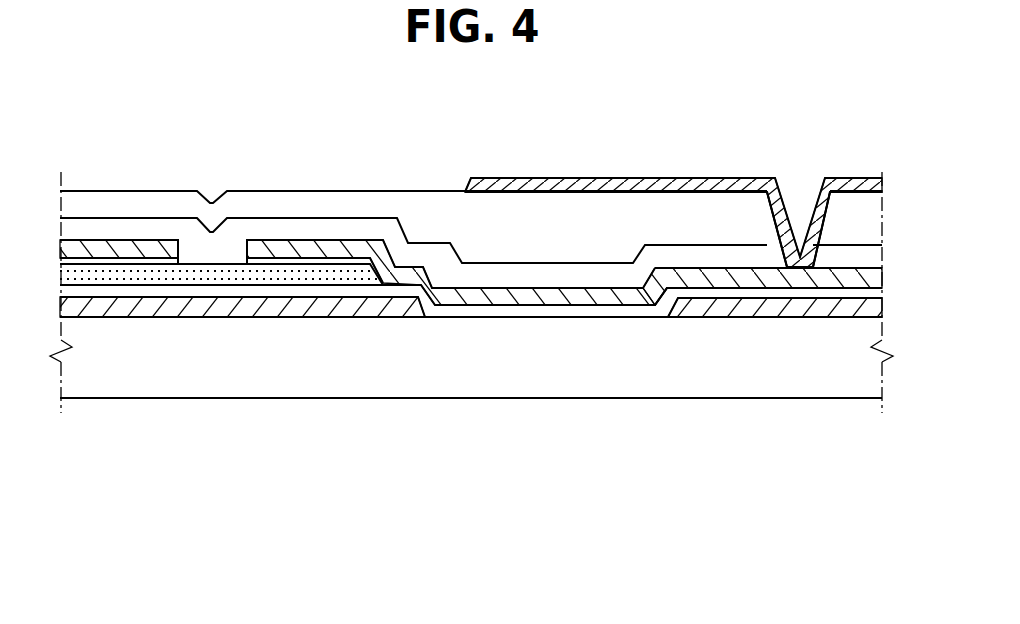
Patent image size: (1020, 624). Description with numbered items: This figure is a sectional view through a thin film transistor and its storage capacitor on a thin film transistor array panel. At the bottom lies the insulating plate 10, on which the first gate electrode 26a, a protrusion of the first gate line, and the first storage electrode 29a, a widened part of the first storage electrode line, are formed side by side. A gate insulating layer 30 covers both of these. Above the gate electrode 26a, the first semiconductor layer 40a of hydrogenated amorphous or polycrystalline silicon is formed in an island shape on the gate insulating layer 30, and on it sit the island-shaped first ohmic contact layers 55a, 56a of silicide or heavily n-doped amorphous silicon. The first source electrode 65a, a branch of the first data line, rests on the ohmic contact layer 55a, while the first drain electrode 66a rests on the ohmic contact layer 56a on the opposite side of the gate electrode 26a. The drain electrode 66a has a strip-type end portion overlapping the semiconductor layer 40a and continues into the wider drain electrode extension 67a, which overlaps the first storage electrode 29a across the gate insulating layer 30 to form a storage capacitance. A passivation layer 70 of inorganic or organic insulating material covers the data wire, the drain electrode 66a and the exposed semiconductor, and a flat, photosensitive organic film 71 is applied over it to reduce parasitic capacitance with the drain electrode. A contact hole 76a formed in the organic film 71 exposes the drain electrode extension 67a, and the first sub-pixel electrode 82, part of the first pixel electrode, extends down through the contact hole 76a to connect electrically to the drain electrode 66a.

The insulating plate 10 is at (106, 383).
The first gate electrode 26a is at (207, 313).
The first storage electrode 29a is at (778, 310).
The gate insulating layer 30 is at (478, 312).
The first semiconductor layer 40a is at (283, 277).
The first ohmic contact layer 55a is at (148, 260).
The first ohmic contact layer 56a is at (270, 262).
The first source electrode 65a is at (84, 250).
The first drain electrode 66a is at (328, 250).
The first drain electrode extension 67a is at (705, 278).
The passivation layer 70 is at (429, 255).
The organic film 71 is at (581, 210).
The contact hole 76a is at (796, 176).
The first sub-pixel electrode 82 is at (657, 187).